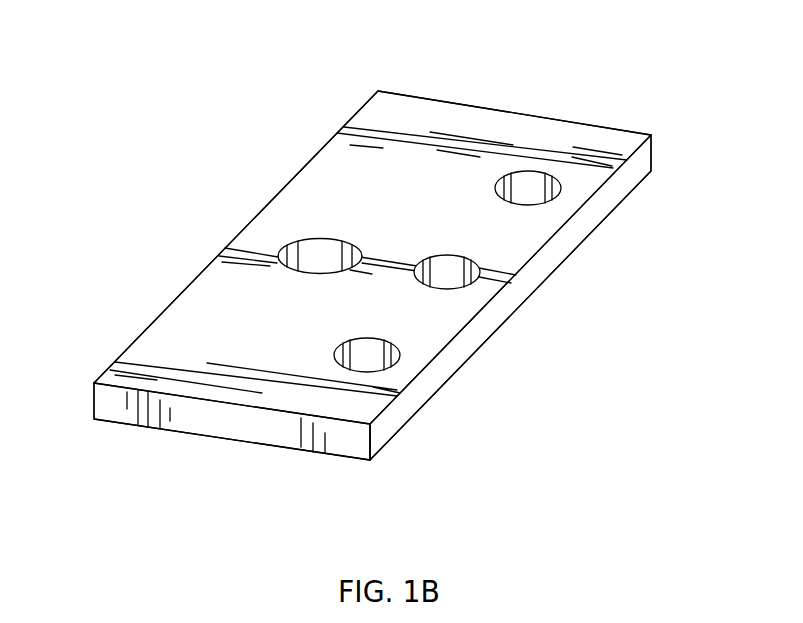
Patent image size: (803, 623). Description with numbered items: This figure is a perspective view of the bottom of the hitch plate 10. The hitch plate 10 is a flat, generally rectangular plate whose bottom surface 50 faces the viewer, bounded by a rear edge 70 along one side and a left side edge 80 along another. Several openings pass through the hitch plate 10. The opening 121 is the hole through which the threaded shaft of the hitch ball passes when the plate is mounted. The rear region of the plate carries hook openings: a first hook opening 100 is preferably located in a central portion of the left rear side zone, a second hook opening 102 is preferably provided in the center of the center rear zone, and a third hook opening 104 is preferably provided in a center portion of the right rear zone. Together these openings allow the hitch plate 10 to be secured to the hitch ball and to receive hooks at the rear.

The hitch plate 10 is at (543, 100).
The bottom surface 50 is at (156, 338).
The rear edge 70 is at (618, 190).
The left side edge 80 is at (222, 422).
The first hook opening 100 is at (372, 357).
The second hook opening 102 is at (452, 276).
The opening 104 is at (527, 191).
The opening 121 is at (312, 247).